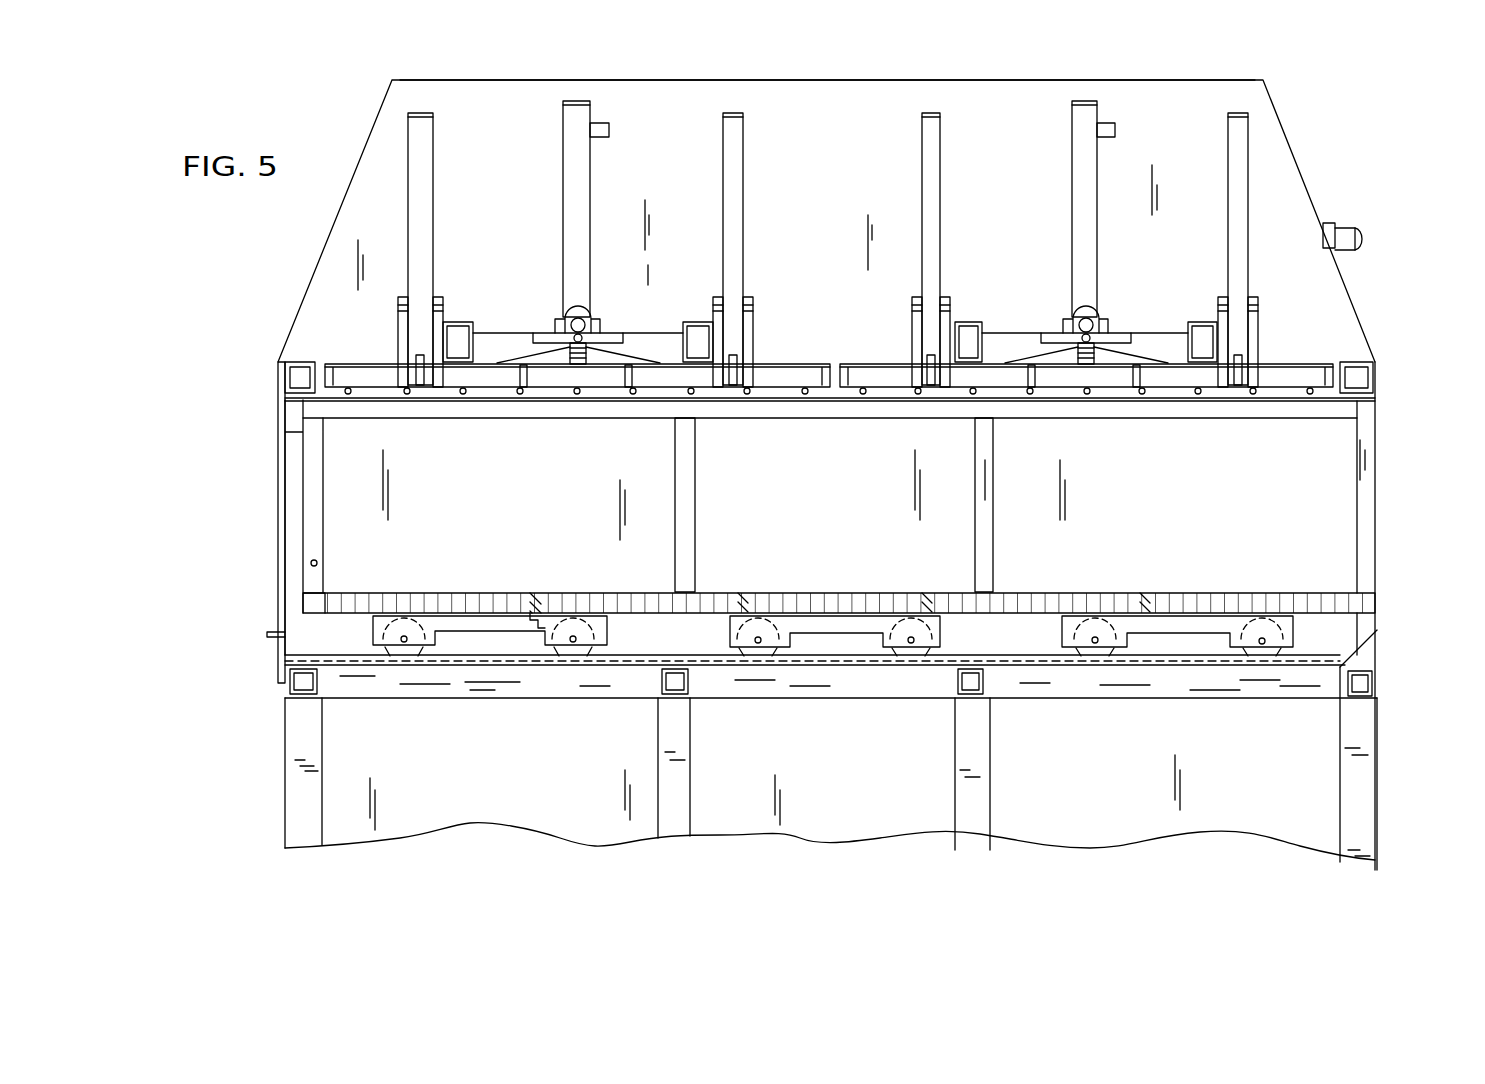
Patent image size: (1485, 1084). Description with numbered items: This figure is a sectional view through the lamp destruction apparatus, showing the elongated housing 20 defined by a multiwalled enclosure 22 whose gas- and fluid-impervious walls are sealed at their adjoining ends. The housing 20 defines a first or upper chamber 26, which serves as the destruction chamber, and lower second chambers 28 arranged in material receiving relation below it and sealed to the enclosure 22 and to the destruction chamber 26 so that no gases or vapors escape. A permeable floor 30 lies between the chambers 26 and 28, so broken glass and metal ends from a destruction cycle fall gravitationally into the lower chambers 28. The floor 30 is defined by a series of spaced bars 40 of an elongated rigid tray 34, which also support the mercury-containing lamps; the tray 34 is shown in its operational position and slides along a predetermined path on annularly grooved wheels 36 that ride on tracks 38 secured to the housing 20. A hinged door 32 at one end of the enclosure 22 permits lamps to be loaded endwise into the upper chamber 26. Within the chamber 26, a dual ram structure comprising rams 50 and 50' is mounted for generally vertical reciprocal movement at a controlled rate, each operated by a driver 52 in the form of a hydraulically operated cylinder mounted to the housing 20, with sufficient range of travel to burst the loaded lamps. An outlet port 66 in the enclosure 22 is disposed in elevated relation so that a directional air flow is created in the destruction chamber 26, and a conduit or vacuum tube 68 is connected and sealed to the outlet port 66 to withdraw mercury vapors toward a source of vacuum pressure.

The elongated housing 20 is at (1058, 74).
The multiwalled enclosure 22 is at (858, 131).
The first or upper chamber 26 is at (1345, 508).
The lower or second chamber 28 is at (1286, 832).
The permeable floor 30 is at (440, 594).
The hinged door 32 is at (278, 516).
The tray 34 is at (704, 528).
The annularly grooved wheels 36 is at (395, 652).
The tracks 38 is at (470, 668).
The spaced bars 40 is at (352, 598).
The ram 50 is at (1086, 417).
The ram 50' is at (577, 419).
The driver 52 is at (1090, 250).
The outlet port 66 is at (1324, 226).
The conduit or vacuum tube 68 is at (1360, 252).